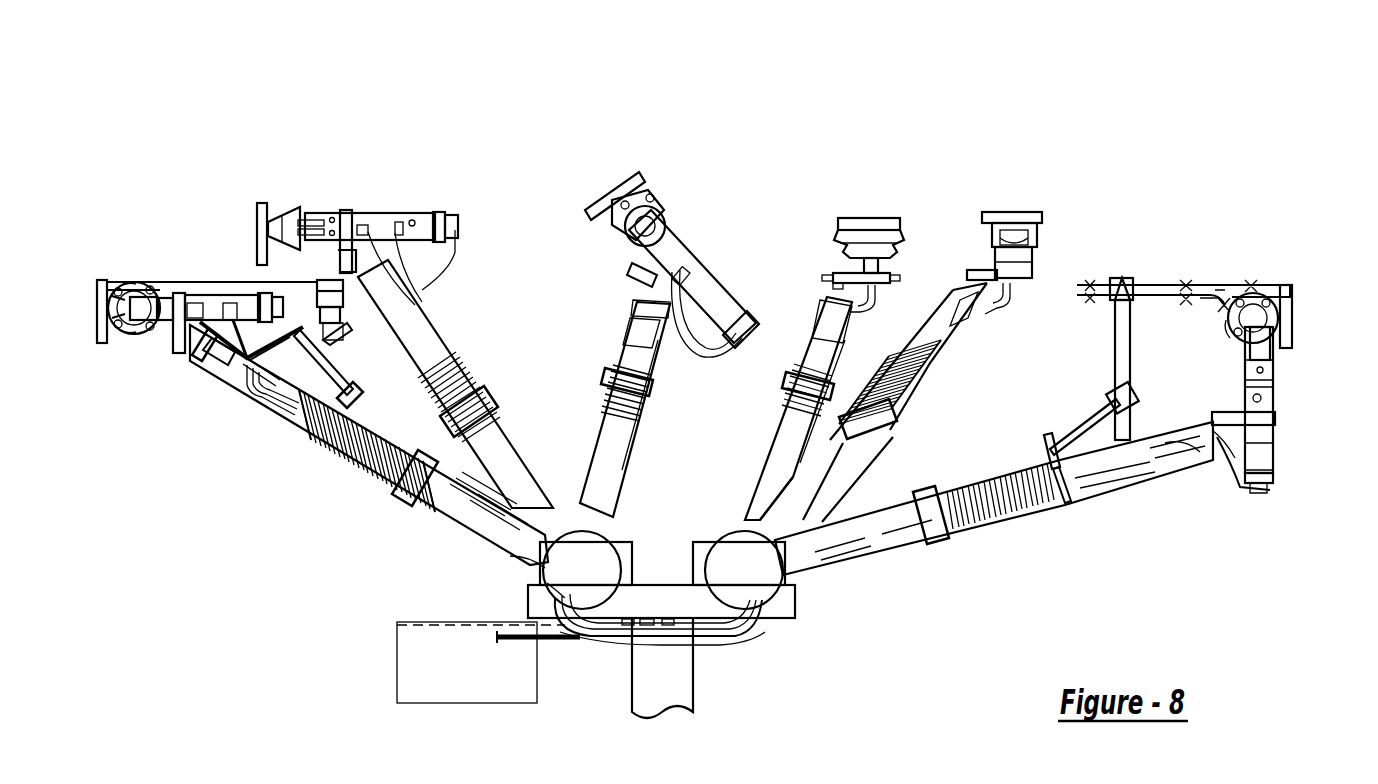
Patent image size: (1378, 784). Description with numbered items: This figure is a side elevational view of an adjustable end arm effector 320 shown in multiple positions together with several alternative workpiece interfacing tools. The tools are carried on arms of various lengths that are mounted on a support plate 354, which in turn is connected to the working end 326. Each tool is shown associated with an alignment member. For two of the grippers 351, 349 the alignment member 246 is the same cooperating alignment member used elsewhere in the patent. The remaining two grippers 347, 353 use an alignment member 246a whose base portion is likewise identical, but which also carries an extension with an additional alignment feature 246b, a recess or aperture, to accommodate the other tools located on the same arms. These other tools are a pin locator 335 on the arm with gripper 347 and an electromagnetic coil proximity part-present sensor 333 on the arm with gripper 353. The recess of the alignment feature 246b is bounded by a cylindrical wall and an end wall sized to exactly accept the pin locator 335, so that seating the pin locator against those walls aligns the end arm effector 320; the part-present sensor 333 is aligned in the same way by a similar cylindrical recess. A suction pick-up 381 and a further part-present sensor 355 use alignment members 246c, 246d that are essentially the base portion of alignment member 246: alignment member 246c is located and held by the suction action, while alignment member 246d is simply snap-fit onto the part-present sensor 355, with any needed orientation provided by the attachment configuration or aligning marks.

The end arm effector 320 is at (905, 131).
The alignment member 246 is at (262, 203).
The alignment member 246a is at (97, 337).
The additional alignment feature 246b is at (330, 280).
The alignment member 246c is at (883, 222).
The alignment member 246d is at (1040, 215).
The gripper 351 is at (375, 217).
The gripper 349 is at (690, 270).
The suction pick-up 381 is at (890, 250).
The part-present sensor 355 is at (1028, 258).
The pin locator 335 is at (1130, 328).
The gripper 347 is at (1277, 400).
The electromagnetic coil proximity part-present sensor 333 is at (345, 303).
The gripper 353 is at (167, 318).
The support plate 354 is at (797, 612).
The working end 326 is at (692, 654).